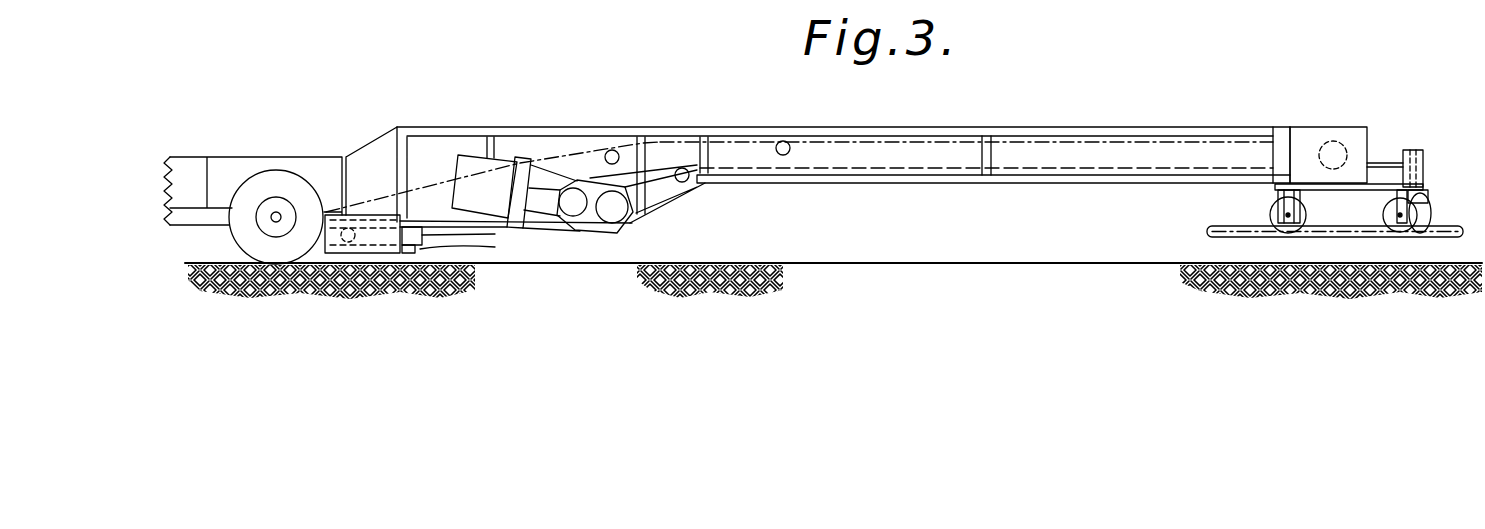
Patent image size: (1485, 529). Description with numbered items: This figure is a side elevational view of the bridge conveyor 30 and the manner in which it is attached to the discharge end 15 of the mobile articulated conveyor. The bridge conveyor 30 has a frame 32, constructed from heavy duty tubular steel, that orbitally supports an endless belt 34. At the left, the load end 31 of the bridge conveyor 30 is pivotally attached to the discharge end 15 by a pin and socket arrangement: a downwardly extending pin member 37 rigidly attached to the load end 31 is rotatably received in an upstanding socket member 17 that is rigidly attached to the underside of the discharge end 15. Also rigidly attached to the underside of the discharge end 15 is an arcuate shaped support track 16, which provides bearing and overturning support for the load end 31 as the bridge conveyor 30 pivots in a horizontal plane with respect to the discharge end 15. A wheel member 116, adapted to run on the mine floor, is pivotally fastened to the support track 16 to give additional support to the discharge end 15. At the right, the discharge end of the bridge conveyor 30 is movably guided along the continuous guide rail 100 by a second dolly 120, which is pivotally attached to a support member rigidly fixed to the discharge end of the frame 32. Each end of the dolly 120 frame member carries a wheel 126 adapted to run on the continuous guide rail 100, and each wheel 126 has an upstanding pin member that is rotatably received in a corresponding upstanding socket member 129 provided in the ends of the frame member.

The discharge end 15 is at (224, 148).
The wheel member 116 is at (293, 180).
The support track 16 is at (358, 252).
The upstanding socket member 17 is at (460, 244).
The pin member 37 is at (402, 258).
The load end 31 is at (471, 119).
The frame 32 is at (1008, 130).
The bridge conveyor 30 is at (856, 192).
The endless belt 34 is at (1232, 122).
The upstanding socket members 129 is at (1424, 167).
The second dolly 120 is at (1337, 198).
The wheel 126 is at (1268, 218).
The continuous guide rail 100 is at (1227, 224).